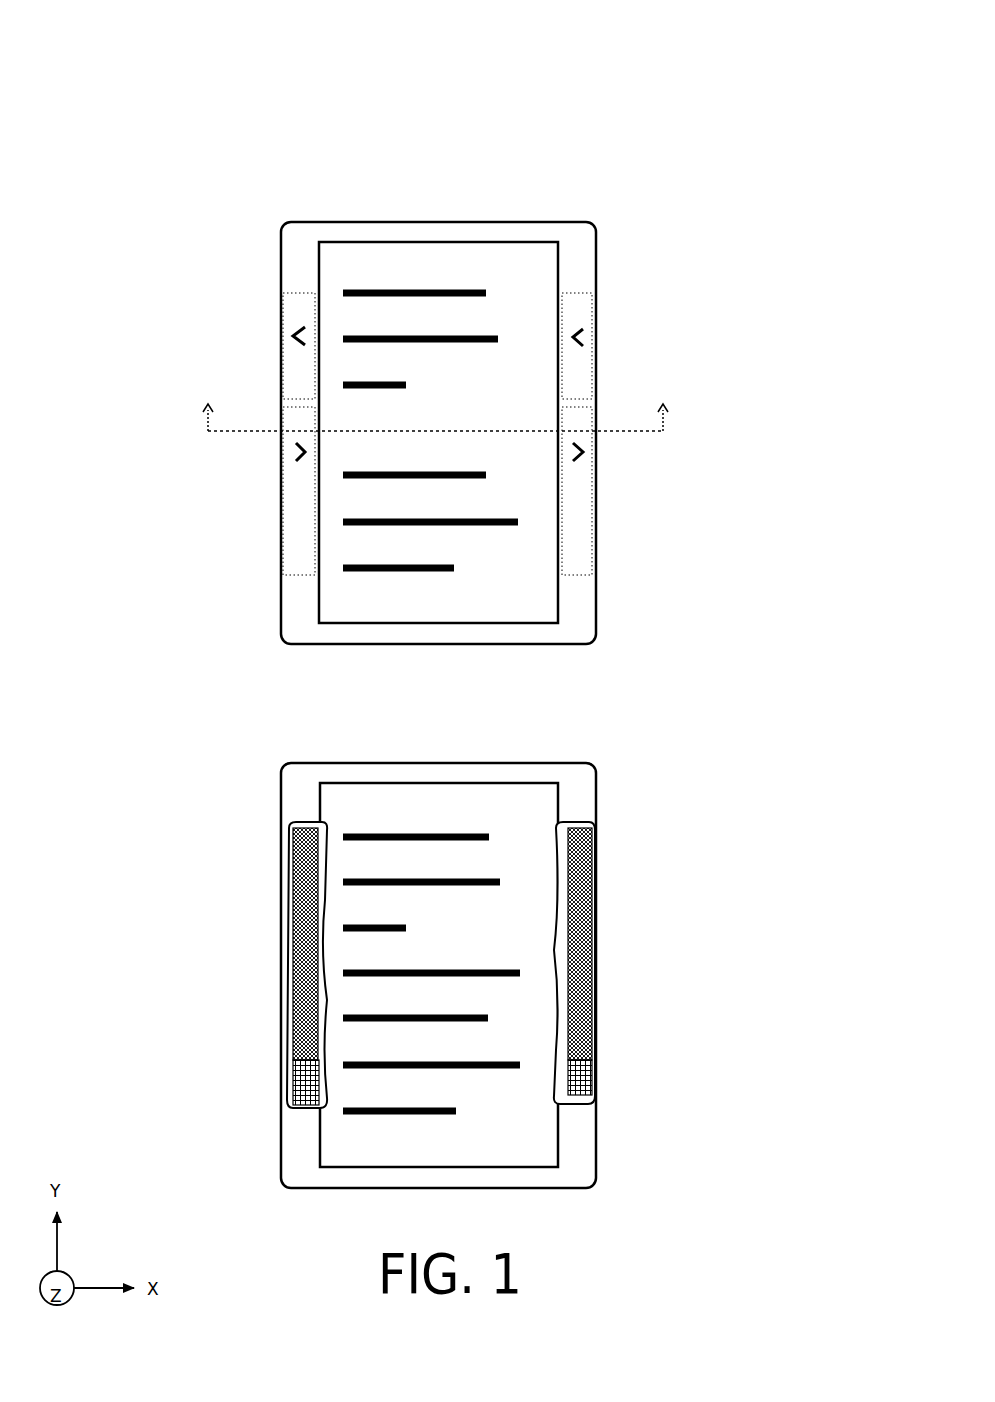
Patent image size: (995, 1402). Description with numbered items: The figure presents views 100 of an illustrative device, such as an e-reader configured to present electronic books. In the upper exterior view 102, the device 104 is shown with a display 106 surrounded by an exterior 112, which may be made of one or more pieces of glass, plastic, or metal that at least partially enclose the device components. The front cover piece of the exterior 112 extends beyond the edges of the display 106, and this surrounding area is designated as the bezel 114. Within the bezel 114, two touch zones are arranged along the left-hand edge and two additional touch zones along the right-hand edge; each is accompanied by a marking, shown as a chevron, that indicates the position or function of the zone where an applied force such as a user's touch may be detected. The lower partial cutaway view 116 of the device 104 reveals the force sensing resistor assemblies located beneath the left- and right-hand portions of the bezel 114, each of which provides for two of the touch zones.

The views 100 is at (716, 43).
The exterior view 102 is at (269, 70).
The device 104 is at (343, 222).
The display 106 is at (507, 277).
The exterior 112 is at (568, 607).
The bezel 114 is at (293, 617).
The partial cutaway view 116 is at (280, 743).